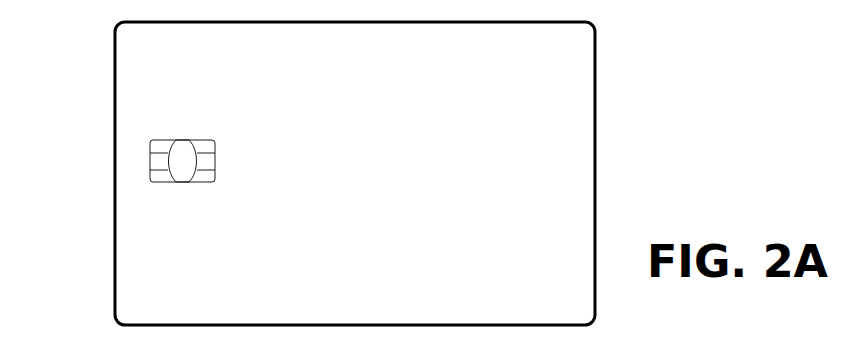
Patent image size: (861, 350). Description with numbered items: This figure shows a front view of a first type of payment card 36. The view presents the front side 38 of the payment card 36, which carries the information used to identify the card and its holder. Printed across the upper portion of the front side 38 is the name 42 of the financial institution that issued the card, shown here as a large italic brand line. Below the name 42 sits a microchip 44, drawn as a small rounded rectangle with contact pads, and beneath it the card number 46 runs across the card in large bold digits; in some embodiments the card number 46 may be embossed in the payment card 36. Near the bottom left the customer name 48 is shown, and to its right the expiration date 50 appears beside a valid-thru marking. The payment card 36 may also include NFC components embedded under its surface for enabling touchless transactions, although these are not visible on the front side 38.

The payment card 36 is at (711, 65).
The front side 38 is at (540, 147).
The name of the financial institution 42 is at (152, 78).
The microchip 44 is at (150, 157).
The card number 46 is at (152, 208).
The customer name 48 is at (170, 292).
The expiration date 50 is at (378, 258).